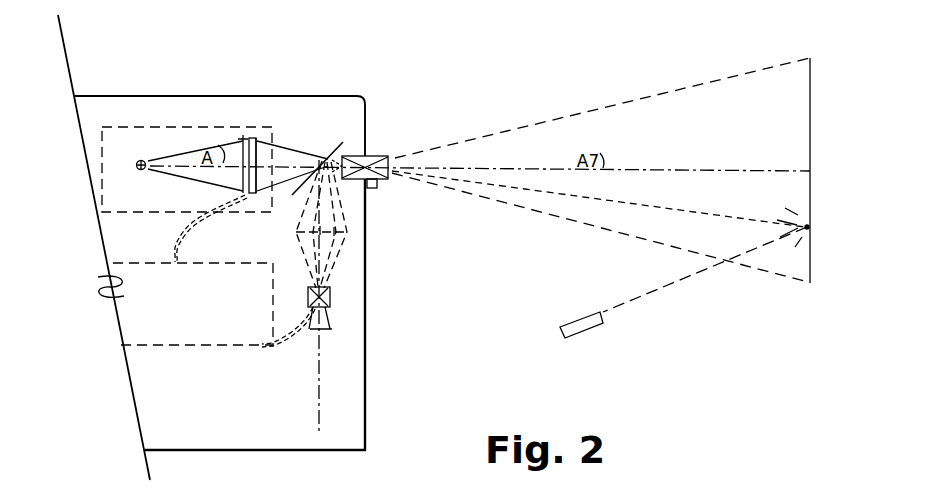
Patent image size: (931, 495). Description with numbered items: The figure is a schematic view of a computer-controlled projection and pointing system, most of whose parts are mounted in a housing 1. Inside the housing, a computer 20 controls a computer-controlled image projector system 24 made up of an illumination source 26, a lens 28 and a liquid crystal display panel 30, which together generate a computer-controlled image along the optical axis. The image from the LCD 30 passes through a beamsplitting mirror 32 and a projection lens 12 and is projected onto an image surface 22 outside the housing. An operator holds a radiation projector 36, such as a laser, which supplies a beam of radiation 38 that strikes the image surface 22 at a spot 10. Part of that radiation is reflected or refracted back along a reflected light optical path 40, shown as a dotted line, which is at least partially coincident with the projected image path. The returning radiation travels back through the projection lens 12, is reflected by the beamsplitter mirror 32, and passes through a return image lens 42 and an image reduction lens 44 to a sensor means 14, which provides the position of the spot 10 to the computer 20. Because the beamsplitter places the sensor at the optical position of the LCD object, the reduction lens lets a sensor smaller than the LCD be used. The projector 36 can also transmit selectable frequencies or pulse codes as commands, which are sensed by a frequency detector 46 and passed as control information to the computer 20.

The housing 1 is at (130, 96).
The spot 10 is at (812, 223).
The projection lens 12 is at (383, 150).
The sensor means 14 is at (333, 335).
The computer 20 is at (193, 304).
The image surface 22 is at (810, 58).
The computer-controlled image projector system 24 is at (255, 130).
The illumination source 26 is at (143, 158).
The lens 28 is at (241, 141).
The liquid crystal display panel 30 is at (258, 137).
The beamsplitting mirror 32 is at (338, 143).
The operator-controlled radiation projector 36 is at (591, 329).
The beam of radiation 38 is at (682, 280).
The reflected light optical path 40 is at (699, 212).
The return image lens 42 is at (354, 238).
The image reduction lens 44 is at (339, 298).
The frequency detector 46 is at (379, 191).